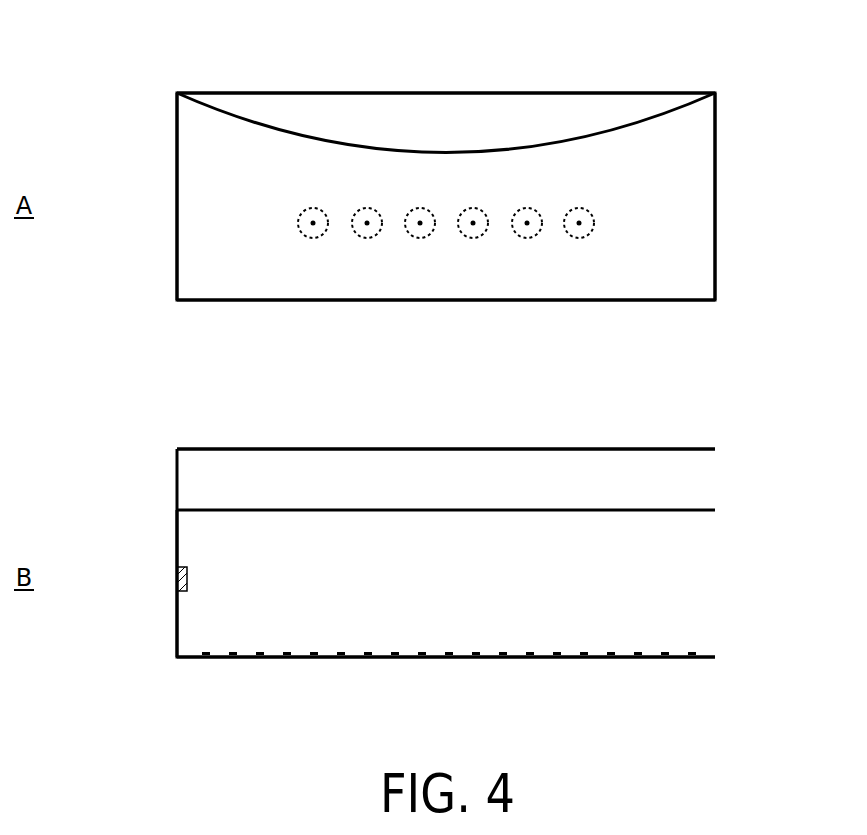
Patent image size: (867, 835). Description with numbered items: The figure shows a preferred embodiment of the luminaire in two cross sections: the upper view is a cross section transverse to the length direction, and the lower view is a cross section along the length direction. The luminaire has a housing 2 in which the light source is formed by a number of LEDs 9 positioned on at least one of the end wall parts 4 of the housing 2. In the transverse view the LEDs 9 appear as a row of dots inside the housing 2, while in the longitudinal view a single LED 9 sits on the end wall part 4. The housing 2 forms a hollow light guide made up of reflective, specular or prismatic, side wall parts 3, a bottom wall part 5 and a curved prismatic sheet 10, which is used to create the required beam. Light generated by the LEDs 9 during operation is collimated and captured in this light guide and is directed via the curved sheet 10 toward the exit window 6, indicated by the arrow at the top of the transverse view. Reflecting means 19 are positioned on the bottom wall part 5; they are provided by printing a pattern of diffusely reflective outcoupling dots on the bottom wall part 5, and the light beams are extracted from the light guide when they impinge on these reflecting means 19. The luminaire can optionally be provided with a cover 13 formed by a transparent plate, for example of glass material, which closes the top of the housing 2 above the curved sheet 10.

The housing 2 is at (171, 90).
The side wall parts 3 is at (177, 225).
The end wall part 4 is at (177, 533).
The bottom wall part 5 is at (245, 304).
The exit window 6 is at (315, 72).
The LEDs 9 is at (473, 238).
The curved prismatic sheet 10 is at (604, 126).
The cover 13 is at (507, 90).
The reflecting means 19 is at (497, 660).